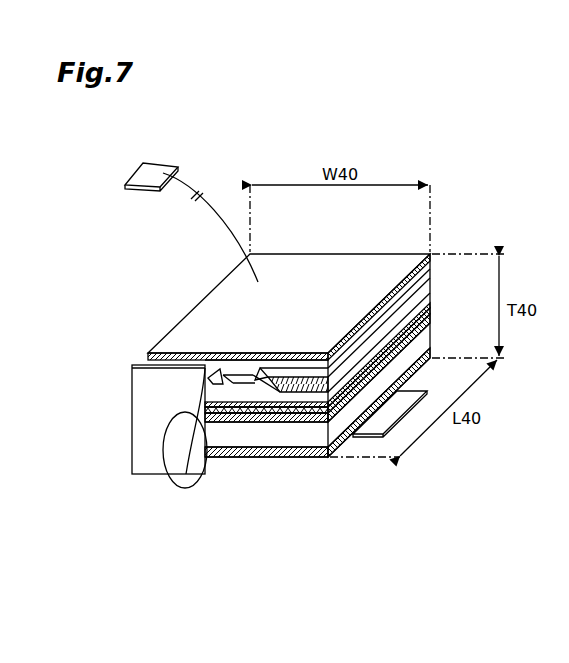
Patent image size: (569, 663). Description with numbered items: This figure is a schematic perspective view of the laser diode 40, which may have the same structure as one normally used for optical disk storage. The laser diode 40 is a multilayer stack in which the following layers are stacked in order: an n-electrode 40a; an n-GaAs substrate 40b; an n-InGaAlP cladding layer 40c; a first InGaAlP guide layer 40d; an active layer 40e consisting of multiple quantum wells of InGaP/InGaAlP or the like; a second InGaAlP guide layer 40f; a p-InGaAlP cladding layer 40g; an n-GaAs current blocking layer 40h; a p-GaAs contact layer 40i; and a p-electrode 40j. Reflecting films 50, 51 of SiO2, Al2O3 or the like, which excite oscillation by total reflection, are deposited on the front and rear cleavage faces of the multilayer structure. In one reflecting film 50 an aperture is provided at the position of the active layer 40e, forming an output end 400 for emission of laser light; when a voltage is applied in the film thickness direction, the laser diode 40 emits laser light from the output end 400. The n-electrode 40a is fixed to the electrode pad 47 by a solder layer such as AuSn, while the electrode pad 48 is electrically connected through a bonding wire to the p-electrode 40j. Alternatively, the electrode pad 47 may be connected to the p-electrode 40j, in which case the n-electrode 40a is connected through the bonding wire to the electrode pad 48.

The laser diode 40 is at (160, 280).
The electrode pad 48 is at (163, 172).
The reflecting film 51 is at (372, 253).
The reflecting film 50 is at (145, 408).
The electrode pad 47 is at (405, 396).
The output end 400 is at (243, 410).
The n-electrode 40a is at (268, 453).
The n-GaAs substrate 40b is at (312, 440).
The n-InGaAlP cladding layer 40c is at (335, 440).
The first InGaAlP guide layer 40d is at (345, 430).
The active layer 40e is at (352, 433).
The second InGaAlP guide layer 40f is at (218, 393).
The p-InGaAlP cladding layer 40g is at (236, 383).
The n-GaAs current blocking layer 40h is at (262, 375).
The p-GaAs contact layer 40i is at (283, 368).
The p-electrode 40j is at (310, 352).